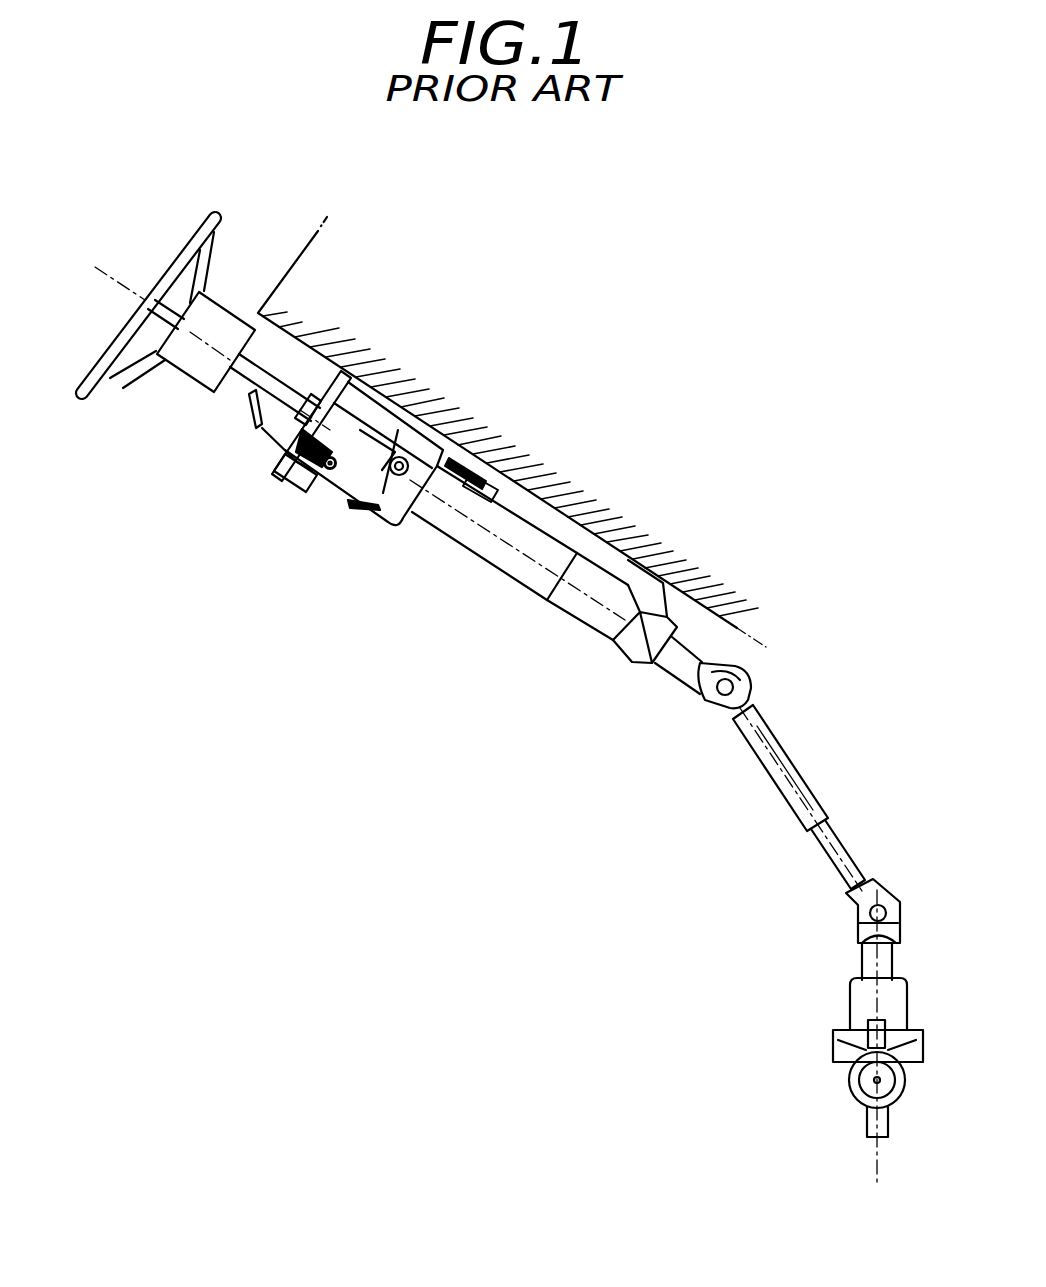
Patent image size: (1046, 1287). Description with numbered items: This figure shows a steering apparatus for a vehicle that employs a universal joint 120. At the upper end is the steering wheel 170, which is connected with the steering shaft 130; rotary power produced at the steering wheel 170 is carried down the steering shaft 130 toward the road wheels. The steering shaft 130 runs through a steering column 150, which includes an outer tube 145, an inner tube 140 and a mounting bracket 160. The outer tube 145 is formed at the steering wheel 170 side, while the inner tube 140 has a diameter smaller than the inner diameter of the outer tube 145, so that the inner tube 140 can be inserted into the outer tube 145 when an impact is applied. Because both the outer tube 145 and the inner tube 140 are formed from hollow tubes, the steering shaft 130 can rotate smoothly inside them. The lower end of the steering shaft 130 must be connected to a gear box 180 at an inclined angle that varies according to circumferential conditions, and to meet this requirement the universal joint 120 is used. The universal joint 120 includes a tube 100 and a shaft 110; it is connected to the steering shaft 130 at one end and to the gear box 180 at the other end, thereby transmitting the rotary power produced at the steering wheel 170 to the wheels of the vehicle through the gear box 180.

The tube 100 is at (801, 777).
The shaft 110 is at (852, 855).
The universal joint 120 is at (791, 832).
The steering shaft 130 is at (677, 673).
The inner tube 140 is at (586, 613).
The outer tube 145 is at (480, 556).
The steering column 150 is at (304, 530).
The mounting bracket 160 is at (497, 468).
The steering wheel 170 is at (86, 398).
The gear box 180 is at (850, 1081).